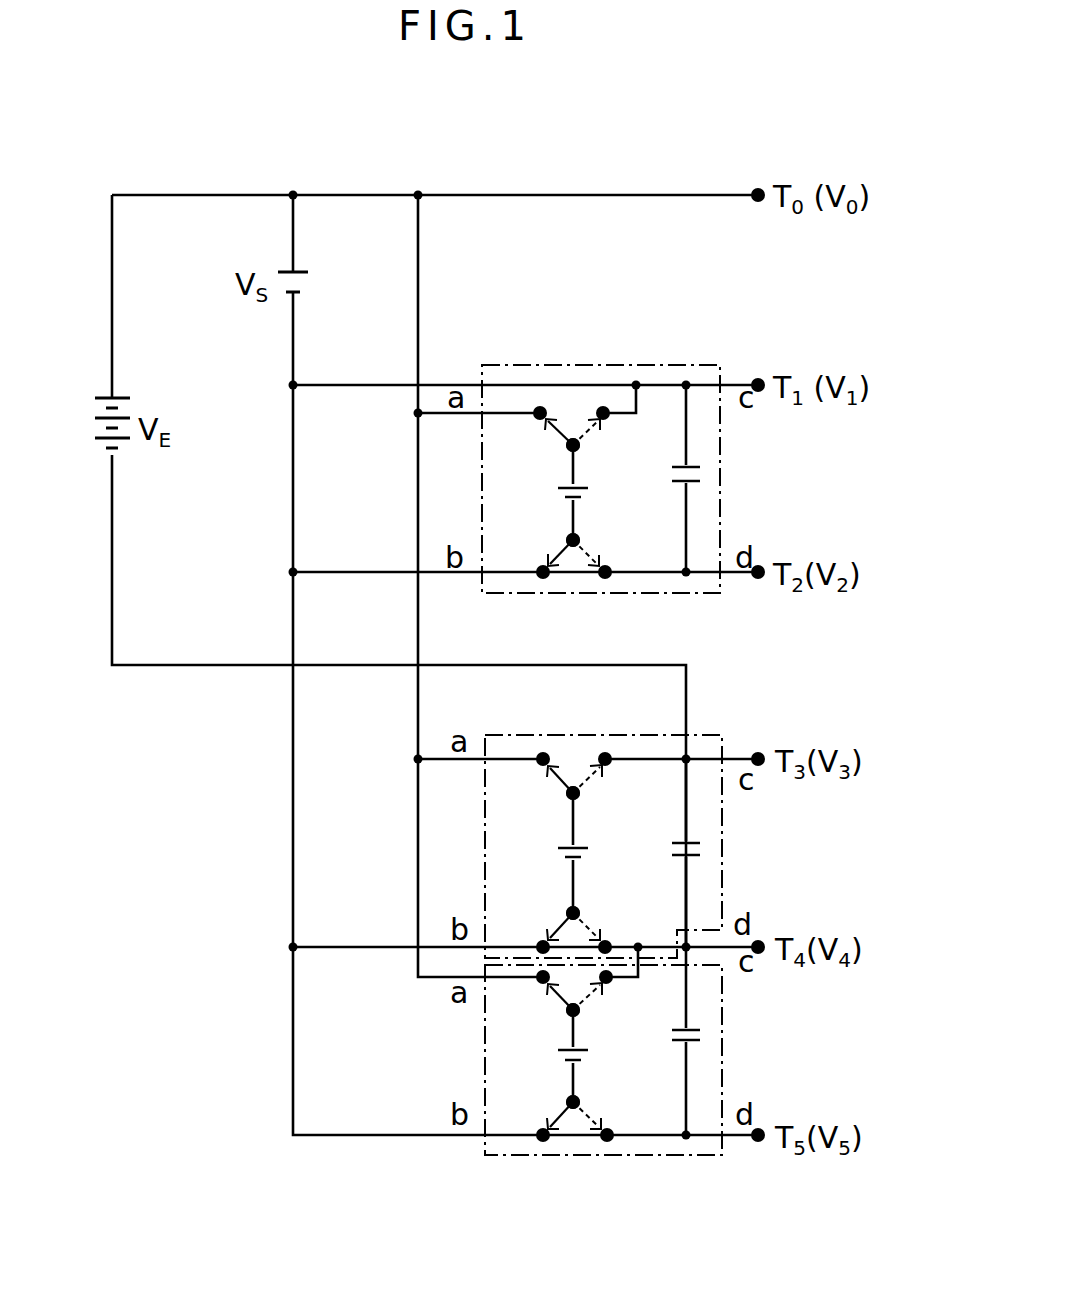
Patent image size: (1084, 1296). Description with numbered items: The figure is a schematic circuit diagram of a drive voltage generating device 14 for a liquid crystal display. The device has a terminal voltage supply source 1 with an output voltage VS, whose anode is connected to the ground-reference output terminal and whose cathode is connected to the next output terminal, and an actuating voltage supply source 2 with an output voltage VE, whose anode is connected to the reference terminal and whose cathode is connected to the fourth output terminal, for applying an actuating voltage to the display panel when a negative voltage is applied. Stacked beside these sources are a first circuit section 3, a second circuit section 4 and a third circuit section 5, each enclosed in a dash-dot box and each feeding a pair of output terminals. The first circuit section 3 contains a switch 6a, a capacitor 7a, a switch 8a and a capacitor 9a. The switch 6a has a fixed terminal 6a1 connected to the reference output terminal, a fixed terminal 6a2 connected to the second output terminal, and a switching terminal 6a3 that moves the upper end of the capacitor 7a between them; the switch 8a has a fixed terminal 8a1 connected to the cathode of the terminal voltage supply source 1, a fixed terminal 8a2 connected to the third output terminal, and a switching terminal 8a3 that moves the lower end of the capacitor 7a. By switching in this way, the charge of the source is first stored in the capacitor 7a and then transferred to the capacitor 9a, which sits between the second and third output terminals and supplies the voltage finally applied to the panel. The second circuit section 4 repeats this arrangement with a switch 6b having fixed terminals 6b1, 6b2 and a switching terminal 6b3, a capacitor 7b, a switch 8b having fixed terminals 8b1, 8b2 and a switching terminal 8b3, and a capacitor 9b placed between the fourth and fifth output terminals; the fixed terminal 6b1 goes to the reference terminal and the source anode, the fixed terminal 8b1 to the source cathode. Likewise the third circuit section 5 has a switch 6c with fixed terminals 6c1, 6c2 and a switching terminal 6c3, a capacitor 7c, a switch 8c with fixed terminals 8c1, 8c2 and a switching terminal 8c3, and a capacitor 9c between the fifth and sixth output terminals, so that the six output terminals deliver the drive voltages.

The terminal voltage supply source 1 is at (305, 287).
The actuating voltage supply source 2 is at (118, 445).
The first circuit section 3 is at (636, 365).
The second circuit section 4 is at (712, 735).
The third circuit section 5 is at (735, 1150).
The drive voltage generating device 14 is at (598, 184).
The switch 6a is at (572, 422).
The fixed terminal 6a1 is at (543, 420).
The fixed terminal 6a2 is at (606, 418).
The switching terminal 6a3 is at (580, 450).
The capacitor 7a is at (565, 490).
The switch 8a is at (573, 560).
The fixed terminal 8a1 is at (543, 580).
The fixed terminal 8a2 is at (609, 566).
The switching terminal 8a3 is at (580, 536).
The capacitor 9a is at (700, 472).
The switch 6b is at (573, 780).
The fixed terminal 6b1 is at (545, 766).
The fixed terminal 6b2 is at (608, 764).
The switching terminal 6b3 is at (578, 798).
The capacitor 7b is at (565, 850).
The switch 8b is at (570, 928).
The fixed terminal 8b1 is at (540, 942).
The fixed terminal 8b2 is at (610, 942).
The switching terminal 8b3 is at (580, 908).
The capacitor 9b is at (700, 850).
The switch 6c is at (568, 1015).
The fixed terminal 6c1 is at (545, 985).
The fixed terminal 6c2 is at (609, 983).
The switching terminal 6c3 is at (578, 1015).
The capacitor 7c is at (562, 1055).
The switch 8c is at (575, 1120).
The fixed terminal 8c1 is at (543, 1143).
The fixed terminal 8c2 is at (615, 1142).
The switching terminal 8c3 is at (581, 1104).
The capacitor 9c is at (700, 1040).